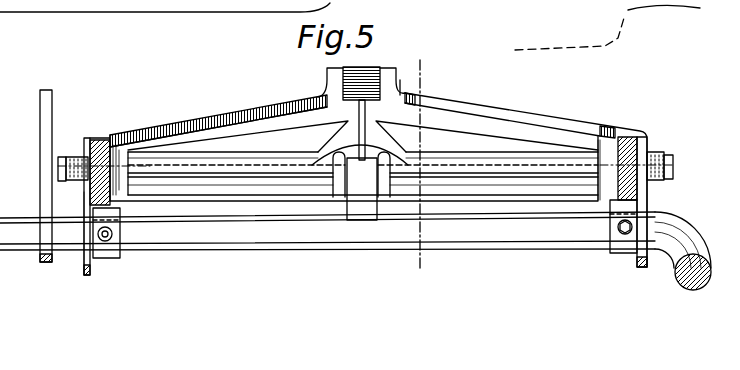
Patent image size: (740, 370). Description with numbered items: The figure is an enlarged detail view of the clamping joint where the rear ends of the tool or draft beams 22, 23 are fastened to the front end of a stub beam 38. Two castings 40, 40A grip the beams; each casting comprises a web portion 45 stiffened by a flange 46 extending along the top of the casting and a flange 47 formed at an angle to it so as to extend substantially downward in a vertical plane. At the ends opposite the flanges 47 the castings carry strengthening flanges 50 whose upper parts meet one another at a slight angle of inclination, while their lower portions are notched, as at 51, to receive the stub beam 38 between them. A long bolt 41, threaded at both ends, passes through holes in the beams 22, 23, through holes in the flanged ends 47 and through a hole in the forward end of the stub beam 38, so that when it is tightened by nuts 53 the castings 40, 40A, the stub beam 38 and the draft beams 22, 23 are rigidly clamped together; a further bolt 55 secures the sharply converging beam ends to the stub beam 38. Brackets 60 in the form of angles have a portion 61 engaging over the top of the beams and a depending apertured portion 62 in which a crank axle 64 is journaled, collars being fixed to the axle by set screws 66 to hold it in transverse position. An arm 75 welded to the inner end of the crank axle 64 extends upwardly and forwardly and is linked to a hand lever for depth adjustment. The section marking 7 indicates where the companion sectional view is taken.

The section line 7- 7 is at (455, 60).
The draft beam 22 is at (89, 192).
The draft beam 23 is at (618, 202).
The stub beam 38 is at (365, 75).
The casting 40 is at (226, 148).
The casting 40A is at (476, 112).
The long bolt 41 is at (160, 165).
The web portion 45 is at (276, 140).
The flange 46 is at (186, 125).
The flange 47 is at (123, 198).
The strengthening flange 50 is at (322, 155).
The notch 51 is at (343, 198).
The nut 53 is at (74, 153).
The bolt 55 is at (318, 86).
The bracket 60 is at (88, 188).
The portion of bracket 61 is at (101, 138).
The depending apertured portion 62 is at (89, 272).
The crank axle 64 is at (497, 233).
The set screw 66 is at (105, 240).
The arm 75 is at (42, 136).